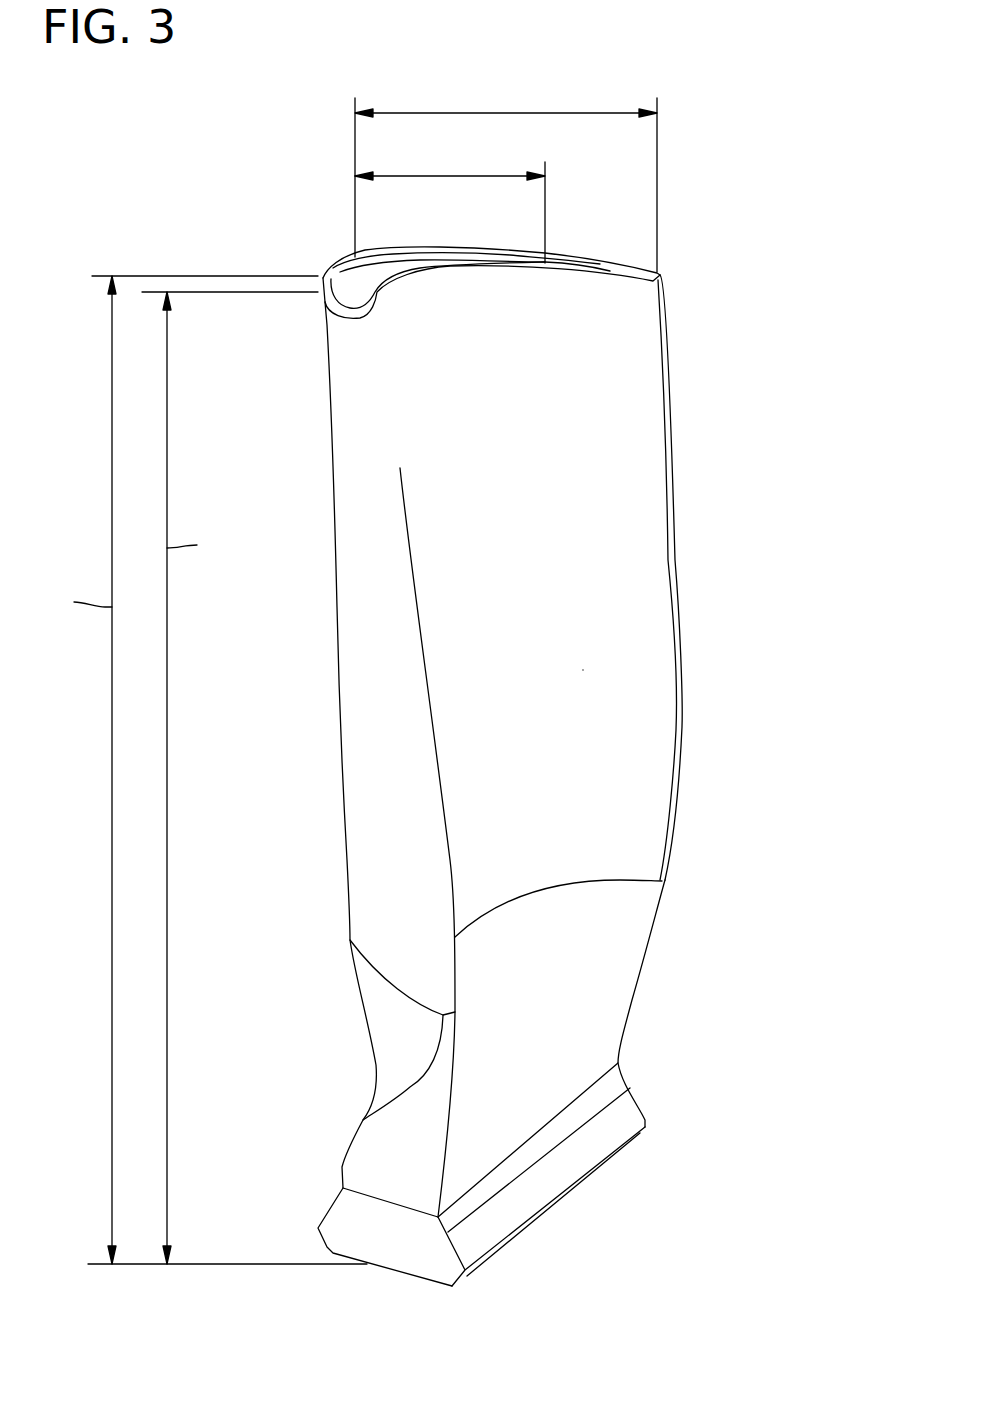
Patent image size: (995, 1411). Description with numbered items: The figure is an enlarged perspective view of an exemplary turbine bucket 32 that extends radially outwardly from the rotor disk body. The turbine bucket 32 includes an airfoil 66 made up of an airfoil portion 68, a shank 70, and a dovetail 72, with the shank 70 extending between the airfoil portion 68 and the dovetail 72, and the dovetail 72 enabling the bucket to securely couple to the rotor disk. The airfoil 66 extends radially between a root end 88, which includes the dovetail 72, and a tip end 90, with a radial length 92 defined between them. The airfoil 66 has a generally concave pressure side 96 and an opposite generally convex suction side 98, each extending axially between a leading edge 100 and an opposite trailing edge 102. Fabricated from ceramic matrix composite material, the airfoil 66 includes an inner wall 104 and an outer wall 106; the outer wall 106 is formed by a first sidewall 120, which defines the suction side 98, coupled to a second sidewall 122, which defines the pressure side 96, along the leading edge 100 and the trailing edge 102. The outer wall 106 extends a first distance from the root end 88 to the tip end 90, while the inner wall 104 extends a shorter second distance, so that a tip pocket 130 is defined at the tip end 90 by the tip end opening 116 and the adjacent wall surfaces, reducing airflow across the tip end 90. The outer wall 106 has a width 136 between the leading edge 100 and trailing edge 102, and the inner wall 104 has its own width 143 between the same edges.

The turbine bucket 32 is at (722, 182).
The airfoil 66 is at (748, 333).
The airfoil portion 68 is at (673, 568).
The shank 70 is at (617, 935).
The dovetail 72 is at (343, 1225).
The root end 88 is at (670, 1090).
The tip end 90 is at (688, 260).
The radial length 92 is at (112, 775).
The pressure side 96 is at (363, 753).
The suction side 98 is at (583, 670).
The leading edge 100 is at (417, 607).
The trailing edge 102 is at (680, 617).
The inner wall 104 is at (398, 892).
The outer wall 106 is at (638, 710).
The tip end opening 116 is at (340, 285).
The first sidewall 120 is at (630, 792).
The second sidewall 122 is at (363, 870).
The tip pocket 130 is at (382, 258).
The width 136 is at (490, 113).
The width 143 is at (433, 176).